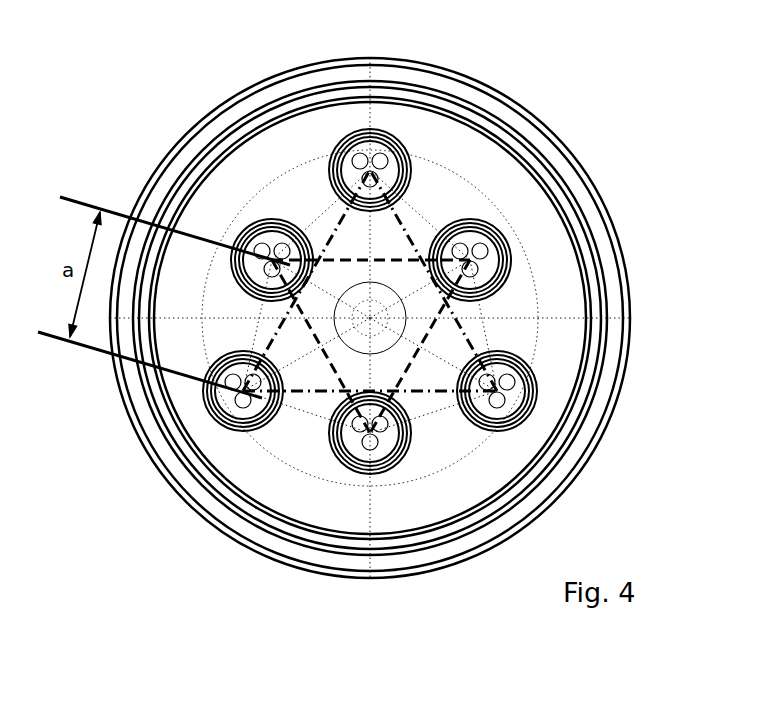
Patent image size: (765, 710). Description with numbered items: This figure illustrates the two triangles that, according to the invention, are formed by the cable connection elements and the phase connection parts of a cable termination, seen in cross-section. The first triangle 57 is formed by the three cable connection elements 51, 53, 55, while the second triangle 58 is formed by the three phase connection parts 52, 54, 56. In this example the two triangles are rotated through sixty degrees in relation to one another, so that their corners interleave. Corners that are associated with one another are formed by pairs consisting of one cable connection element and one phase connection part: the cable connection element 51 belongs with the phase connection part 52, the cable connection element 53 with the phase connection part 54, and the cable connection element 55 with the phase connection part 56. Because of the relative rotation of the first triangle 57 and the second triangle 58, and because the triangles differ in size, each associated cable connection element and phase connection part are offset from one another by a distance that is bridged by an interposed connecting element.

The cable connection element 51 is at (270, 242).
The phase connection part 52 is at (230, 398).
The cable connection element 53 is at (353, 440).
The phase connection part 54 is at (497, 392).
The cable connection element 55 is at (473, 240).
The phase connection part 56 is at (382, 168).
The first triangle 57 is at (335, 375).
The second triangle 58 is at (455, 317).